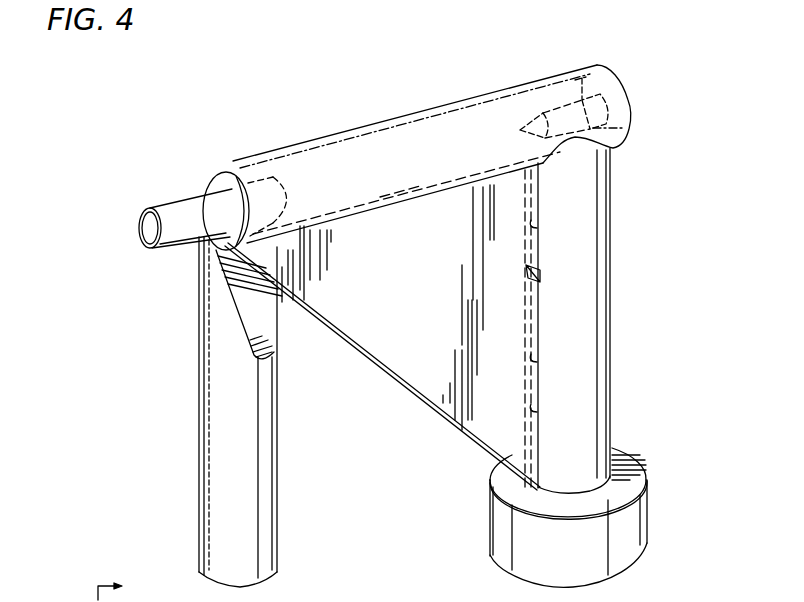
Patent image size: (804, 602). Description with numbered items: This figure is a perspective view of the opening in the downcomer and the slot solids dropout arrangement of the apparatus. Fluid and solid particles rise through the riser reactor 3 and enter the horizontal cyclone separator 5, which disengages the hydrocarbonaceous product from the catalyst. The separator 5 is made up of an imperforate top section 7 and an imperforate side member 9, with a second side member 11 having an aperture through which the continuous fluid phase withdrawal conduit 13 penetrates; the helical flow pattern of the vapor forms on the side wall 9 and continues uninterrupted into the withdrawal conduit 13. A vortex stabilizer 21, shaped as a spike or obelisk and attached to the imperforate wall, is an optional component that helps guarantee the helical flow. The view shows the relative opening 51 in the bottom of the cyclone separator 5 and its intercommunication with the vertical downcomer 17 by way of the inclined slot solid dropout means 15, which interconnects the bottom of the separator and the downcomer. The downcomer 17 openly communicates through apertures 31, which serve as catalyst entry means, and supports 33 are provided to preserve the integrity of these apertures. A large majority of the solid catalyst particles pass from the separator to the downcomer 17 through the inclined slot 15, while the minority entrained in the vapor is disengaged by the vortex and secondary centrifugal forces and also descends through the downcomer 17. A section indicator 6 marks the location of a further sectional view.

The riser reactor 3 is at (199, 450).
The horizontal cyclone separator 5 is at (309, 95).
The section line 6 is at (118, 587).
The imperforate top section 7 is at (368, 128).
The imperforate side member 9 is at (606, 85).
The second side member 11 is at (216, 184).
The fluid phase withdrawal conduit 13 is at (172, 207).
The inclined slot solid dropout means 15 is at (389, 360).
The downcomer vertical conduit 17 is at (612, 310).
The vortex stabilizer 21 is at (603, 110).
The apertures 31 is at (537, 228).
The supports 33 is at (537, 284).
The opening 51 is at (405, 203).